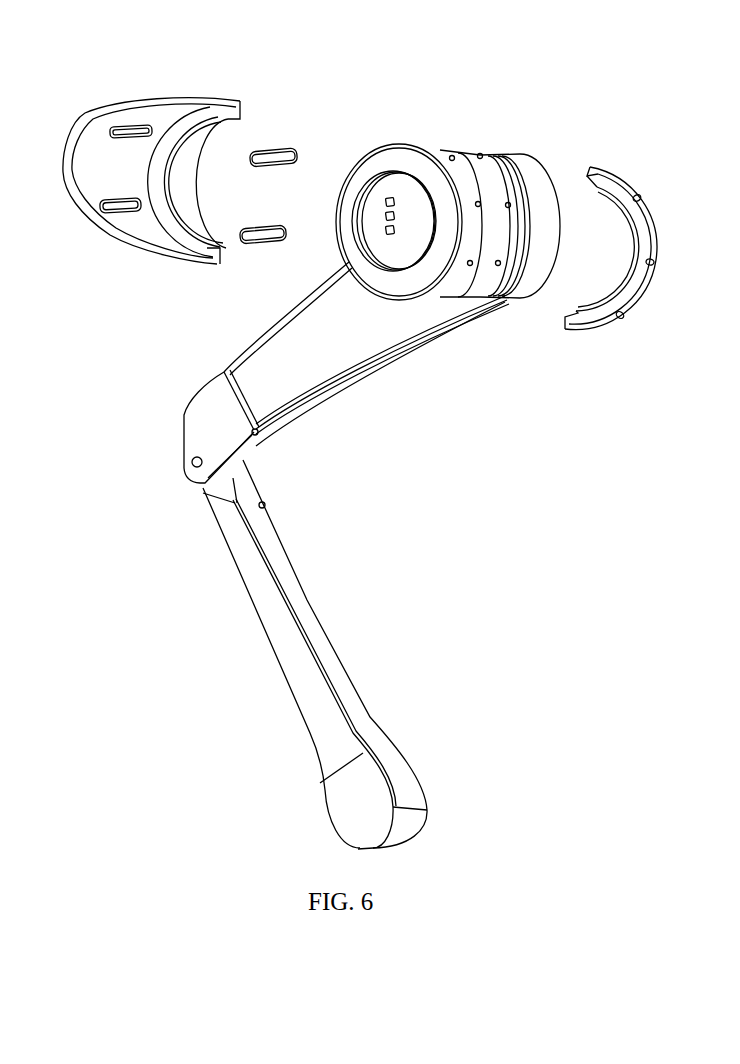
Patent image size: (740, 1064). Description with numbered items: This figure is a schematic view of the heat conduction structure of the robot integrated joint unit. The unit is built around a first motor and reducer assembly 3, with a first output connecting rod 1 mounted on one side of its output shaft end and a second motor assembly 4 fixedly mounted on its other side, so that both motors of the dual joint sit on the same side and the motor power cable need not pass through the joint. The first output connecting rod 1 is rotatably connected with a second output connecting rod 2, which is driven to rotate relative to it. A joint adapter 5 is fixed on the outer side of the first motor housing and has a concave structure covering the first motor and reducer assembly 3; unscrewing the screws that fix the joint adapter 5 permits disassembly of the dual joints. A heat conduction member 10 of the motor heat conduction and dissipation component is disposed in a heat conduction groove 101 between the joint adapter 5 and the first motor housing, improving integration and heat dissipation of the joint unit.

The first output connecting rod 1 is at (343, 348).
The second output connecting rod 2 is at (300, 653).
The first motor and reducer assembly 3 is at (487, 273).
The second motor assembly 4 is at (445, 277).
The joint adapter 5 is at (207, 100).
The heat conduction member 10 is at (273, 148).
The heat conduction groove 101 is at (113, 207).